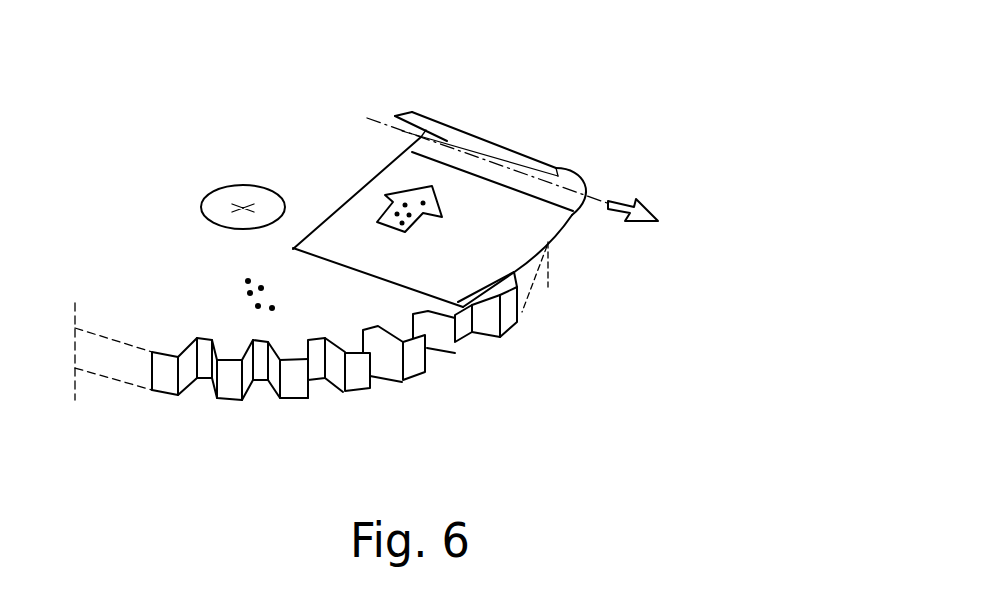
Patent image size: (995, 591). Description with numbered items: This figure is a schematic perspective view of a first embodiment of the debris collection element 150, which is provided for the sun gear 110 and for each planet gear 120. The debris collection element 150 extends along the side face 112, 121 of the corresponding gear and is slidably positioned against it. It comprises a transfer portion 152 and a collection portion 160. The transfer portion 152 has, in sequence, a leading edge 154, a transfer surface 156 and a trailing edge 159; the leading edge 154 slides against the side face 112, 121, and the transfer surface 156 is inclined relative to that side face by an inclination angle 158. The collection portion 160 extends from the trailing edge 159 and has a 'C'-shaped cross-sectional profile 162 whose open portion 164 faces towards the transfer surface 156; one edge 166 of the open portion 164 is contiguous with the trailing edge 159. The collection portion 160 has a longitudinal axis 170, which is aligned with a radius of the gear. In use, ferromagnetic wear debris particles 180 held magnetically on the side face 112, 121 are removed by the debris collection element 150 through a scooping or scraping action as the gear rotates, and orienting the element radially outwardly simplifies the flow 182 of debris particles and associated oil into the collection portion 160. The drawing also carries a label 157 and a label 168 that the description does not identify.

The sun gear 110 is at (144, 266).
The planet gear 120 is at (202, 266).
The side face 112 is at (216, 320).
The side face 121 is at (166, 402).
The debris collection element 150 is at (517, 145).
The transfer portion 152 is at (374, 187).
The leading edge 154 is at (326, 260).
The transfer surface 156 is at (352, 240).
The lower side of plate 157 is at (390, 262).
The inclination angle 158 is at (514, 276).
The trailing edge 159 is at (572, 216).
The collection portion 160 is at (398, 117).
The 'C'-shaped cross-sectional profile 162 is at (557, 167).
The open portion 164 is at (378, 120).
The edge 166 is at (483, 180).
The edge 168 is at (447, 145).
The longitudinal axis 170 is at (658, 221).
The ferromagnetic wear debris particles 180 is at (245, 293).
The flow 182 is at (642, 200).